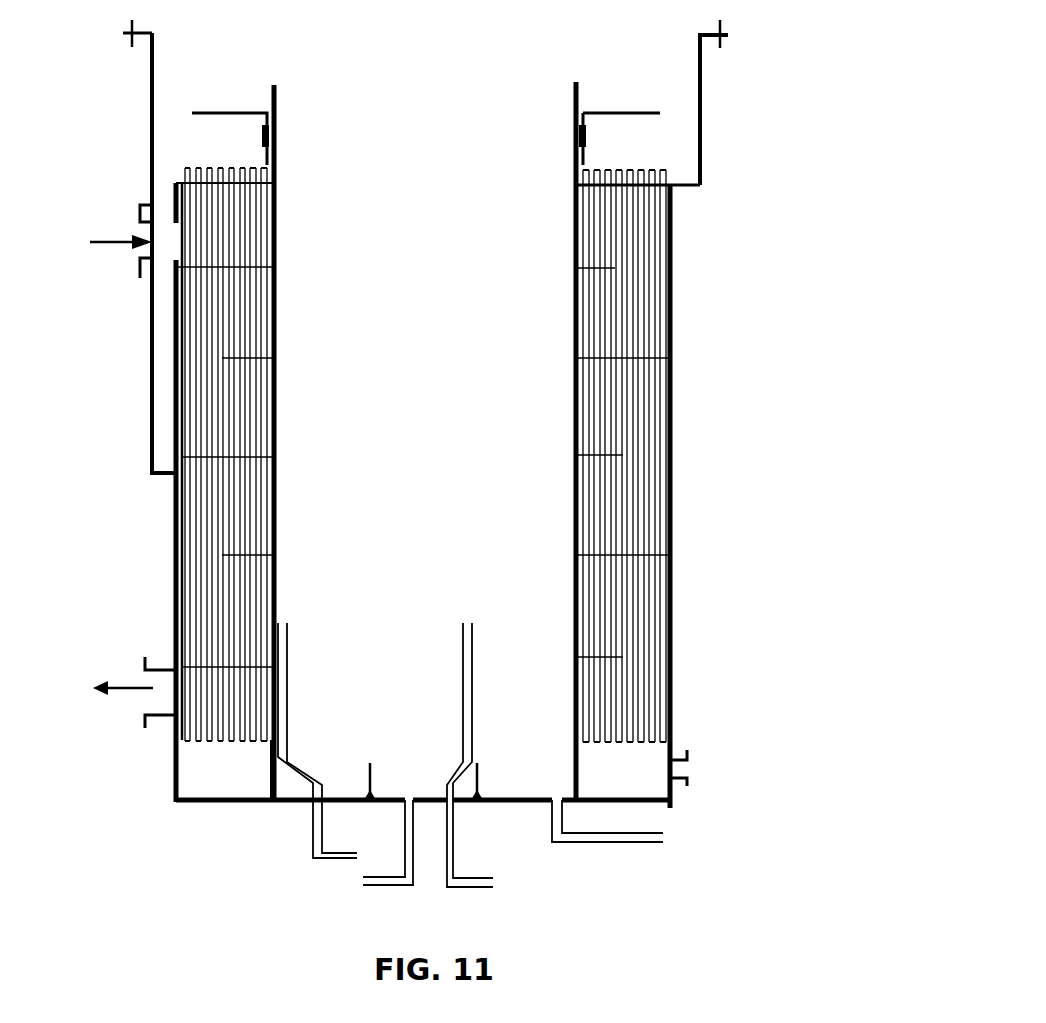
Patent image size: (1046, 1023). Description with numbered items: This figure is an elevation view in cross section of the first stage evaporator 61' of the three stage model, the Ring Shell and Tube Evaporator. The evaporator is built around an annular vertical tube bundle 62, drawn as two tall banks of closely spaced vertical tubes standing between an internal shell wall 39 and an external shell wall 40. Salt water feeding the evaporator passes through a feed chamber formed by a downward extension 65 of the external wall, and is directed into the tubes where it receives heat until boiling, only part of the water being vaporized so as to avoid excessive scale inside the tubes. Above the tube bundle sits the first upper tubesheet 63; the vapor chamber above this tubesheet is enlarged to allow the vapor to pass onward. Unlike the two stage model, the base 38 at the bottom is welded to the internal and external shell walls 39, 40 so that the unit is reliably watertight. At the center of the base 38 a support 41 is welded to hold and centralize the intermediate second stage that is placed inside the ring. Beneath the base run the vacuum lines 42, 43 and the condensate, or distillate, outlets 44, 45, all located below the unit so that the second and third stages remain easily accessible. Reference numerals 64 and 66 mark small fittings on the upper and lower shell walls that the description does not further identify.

The base 38 is at (223, 802).
The internal shell wall 39 is at (573, 585).
The external shell wall 40 is at (673, 477).
The support 41 is at (373, 773).
The vacuum line 42 is at (370, 856).
The vacuum line 43 is at (507, 885).
The condensate outlet 44 is at (332, 883).
The condensate outlet 45 is at (680, 835).
The first stage evaporator 61' is at (725, 413).
The annular vertical tube bundle 62 is at (673, 335).
The first upper tubesheet 63 is at (692, 199).
The connector 64 is at (275, 112).
The downward extension 65 is at (177, 765).
The lower housing brackets 66 is at (618, 772).